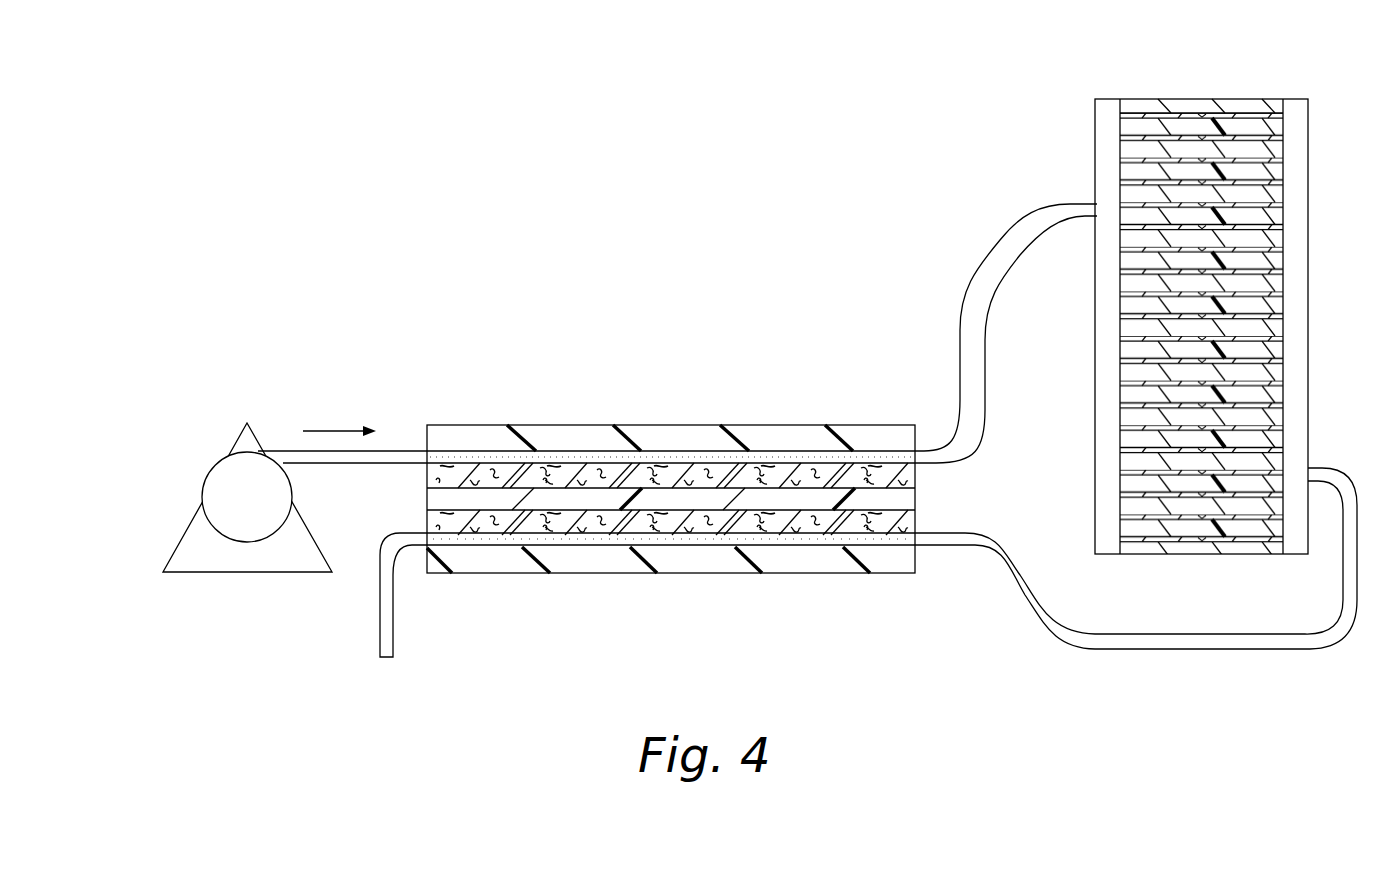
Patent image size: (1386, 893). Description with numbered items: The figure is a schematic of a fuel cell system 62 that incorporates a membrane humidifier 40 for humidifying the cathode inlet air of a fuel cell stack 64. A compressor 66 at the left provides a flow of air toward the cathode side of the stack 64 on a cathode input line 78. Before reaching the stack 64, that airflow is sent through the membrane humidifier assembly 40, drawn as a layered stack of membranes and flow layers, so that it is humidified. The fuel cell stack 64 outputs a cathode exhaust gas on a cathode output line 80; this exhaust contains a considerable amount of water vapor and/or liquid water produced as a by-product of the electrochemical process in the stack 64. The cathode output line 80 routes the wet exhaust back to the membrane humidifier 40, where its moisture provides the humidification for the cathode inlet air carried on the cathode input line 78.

The membrane humidifier 40 is at (618, 418).
The fuel cell system 62 is at (630, 175).
The fuel cell stack 64 is at (1172, 112).
The compressor 66 is at (223, 451).
The cathode input line 78 is at (985, 282).
The cathode output line 80 is at (1138, 649).